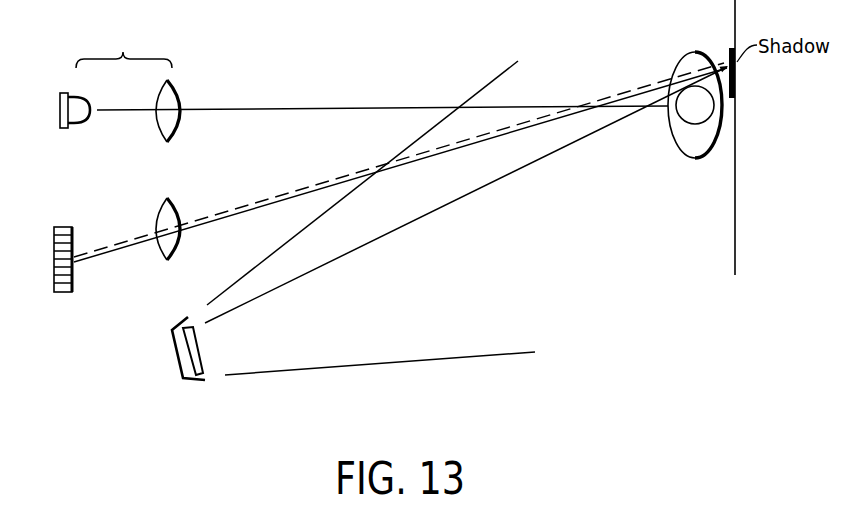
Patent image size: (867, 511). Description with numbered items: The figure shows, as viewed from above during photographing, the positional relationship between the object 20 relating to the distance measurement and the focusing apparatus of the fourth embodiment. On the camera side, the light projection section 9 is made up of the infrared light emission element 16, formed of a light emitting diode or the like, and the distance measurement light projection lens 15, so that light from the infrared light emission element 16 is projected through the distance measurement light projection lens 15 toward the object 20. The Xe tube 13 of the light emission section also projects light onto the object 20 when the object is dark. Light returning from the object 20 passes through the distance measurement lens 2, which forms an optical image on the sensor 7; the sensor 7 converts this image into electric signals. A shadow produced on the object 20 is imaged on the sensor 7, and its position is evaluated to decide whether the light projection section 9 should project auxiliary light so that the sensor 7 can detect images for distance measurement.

The light projection section 9 is at (124, 45).
The infrared light emission element 16 is at (63, 130).
The distance measurement light projection lens 15 is at (157, 131).
The distance measurement lens 2 is at (157, 247).
The sensor array 7 is at (63, 292).
The Xe tube 13 is at (177, 358).
The object 20 is at (691, 160).